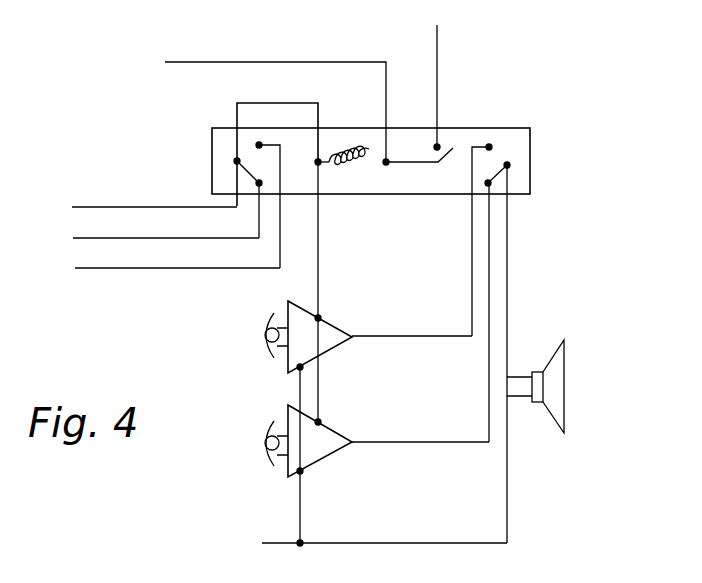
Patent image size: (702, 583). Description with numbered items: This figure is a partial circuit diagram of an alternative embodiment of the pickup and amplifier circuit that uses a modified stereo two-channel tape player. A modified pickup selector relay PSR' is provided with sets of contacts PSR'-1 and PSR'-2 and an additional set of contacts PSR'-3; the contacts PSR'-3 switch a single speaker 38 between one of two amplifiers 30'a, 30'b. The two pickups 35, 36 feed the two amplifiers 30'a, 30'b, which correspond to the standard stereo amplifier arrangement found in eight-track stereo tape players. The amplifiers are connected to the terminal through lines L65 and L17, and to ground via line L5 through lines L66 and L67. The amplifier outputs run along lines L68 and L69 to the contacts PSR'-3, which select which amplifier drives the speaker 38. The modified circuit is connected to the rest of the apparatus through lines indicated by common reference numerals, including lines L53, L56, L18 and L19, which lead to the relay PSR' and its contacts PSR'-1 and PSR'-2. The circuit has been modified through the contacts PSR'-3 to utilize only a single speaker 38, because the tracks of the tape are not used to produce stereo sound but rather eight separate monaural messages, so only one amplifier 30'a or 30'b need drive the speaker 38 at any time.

The modified pickup selector relay PSR' is at (371, 179).
The pickup selector relay contacts PSR'-1 is at (276, 185).
The pickup selector relay contacts PSR'-2 is at (387, 169).
The additional set of contacts PSR'-3 is at (537, 339).
The line L53 is at (306, 62).
The line L56 is at (437, 62).
The line L17 is at (145, 206).
The line L18 is at (147, 238).
The line L19 is at (153, 268).
The line L65 is at (320, 272).
The line L66 is at (300, 389).
The line L67 is at (302, 521).
The line L68 is at (412, 337).
The line L69 is at (425, 443).
The ground line L5 is at (279, 542).
The amplifier 30'a is at (348, 335).
The amplifier 30'b is at (345, 437).
The pickup 35 is at (264, 331).
The pickup 36 is at (264, 444).
The speaker 38 is at (565, 388).